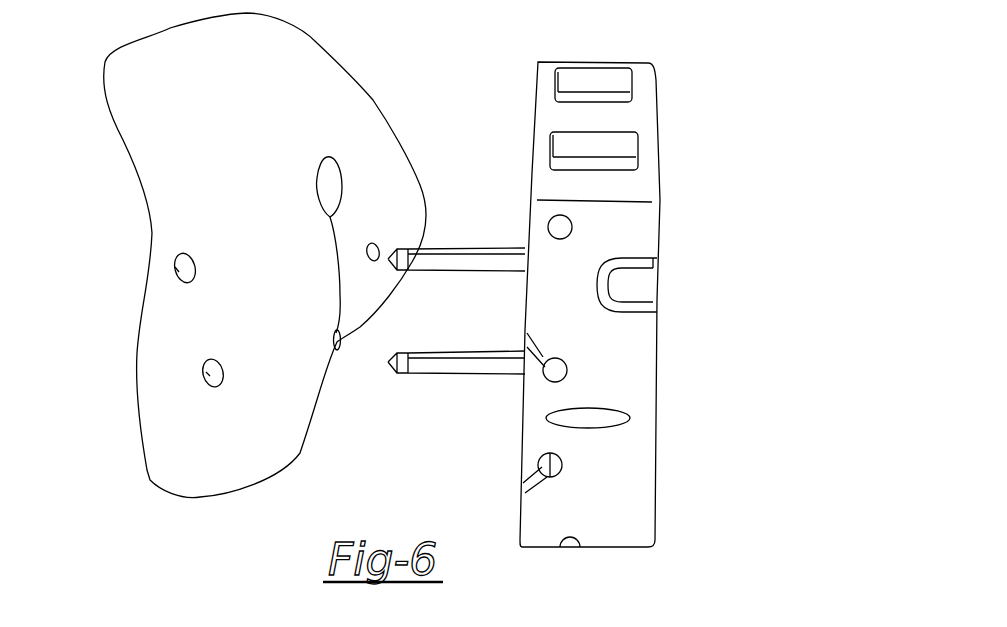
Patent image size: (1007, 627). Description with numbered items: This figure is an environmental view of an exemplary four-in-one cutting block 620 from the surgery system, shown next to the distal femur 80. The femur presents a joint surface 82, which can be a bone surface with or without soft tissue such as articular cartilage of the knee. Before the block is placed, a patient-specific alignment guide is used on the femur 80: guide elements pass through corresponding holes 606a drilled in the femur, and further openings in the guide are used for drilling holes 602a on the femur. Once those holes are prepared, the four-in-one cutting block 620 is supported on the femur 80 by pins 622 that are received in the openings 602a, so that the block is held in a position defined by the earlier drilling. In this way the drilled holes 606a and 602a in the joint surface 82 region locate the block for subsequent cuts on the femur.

The distal femur 80 is at (343, 95).
The joint surface 82 is at (284, 245).
The holes 606a is at (176, 267).
The holes 602a is at (382, 248).
The pins 622 is at (450, 267).
The four-in-one cutting block 620 is at (657, 460).